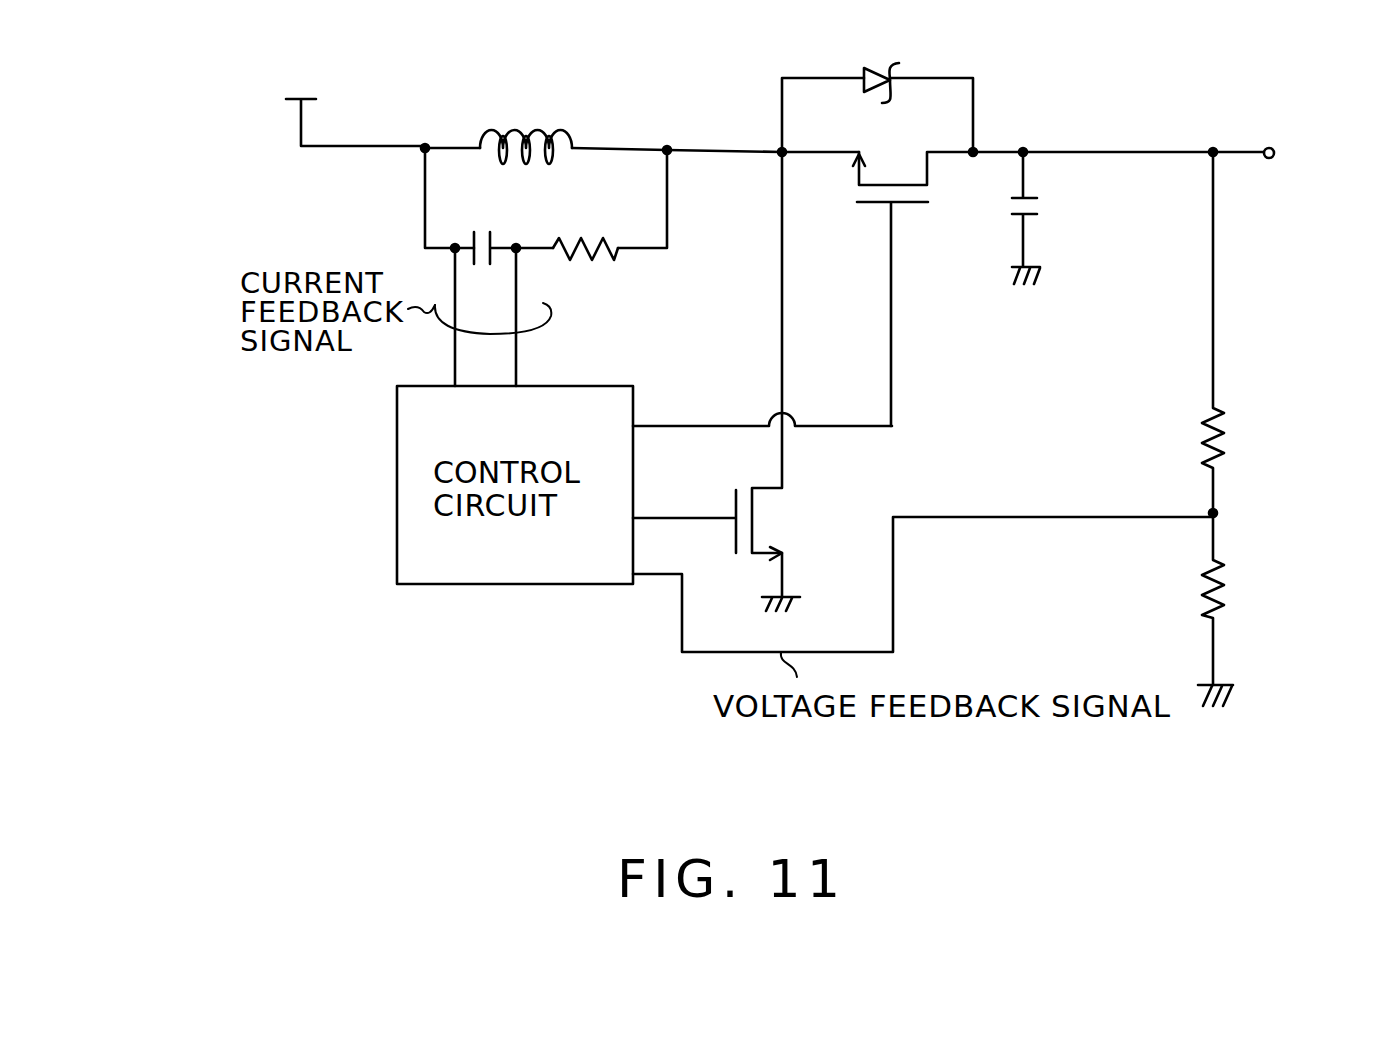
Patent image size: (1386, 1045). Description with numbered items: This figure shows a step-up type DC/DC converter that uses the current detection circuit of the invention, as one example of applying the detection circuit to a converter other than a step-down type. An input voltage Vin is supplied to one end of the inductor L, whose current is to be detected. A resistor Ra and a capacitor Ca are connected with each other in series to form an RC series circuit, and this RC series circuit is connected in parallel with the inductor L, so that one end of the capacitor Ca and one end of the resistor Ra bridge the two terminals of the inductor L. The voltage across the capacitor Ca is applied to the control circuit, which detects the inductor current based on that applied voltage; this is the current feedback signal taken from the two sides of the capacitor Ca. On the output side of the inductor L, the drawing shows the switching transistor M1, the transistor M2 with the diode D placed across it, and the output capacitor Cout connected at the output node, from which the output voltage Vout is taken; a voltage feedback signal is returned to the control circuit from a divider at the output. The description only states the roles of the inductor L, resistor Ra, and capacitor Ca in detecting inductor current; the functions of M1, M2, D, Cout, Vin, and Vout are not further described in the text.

The input voltage terminal Vin is at (355, 102).
The inductor L is at (546, 126).
The capacitor Ca is at (513, 225).
The resistor Ra is at (585, 224).
The diode D is at (877, 86).
The transistor M2 is at (920, 289).
The output capacitor Cout is at (1061, 218).
The output voltage terminal Vout is at (1279, 159).
The transistor M1 is at (737, 381).